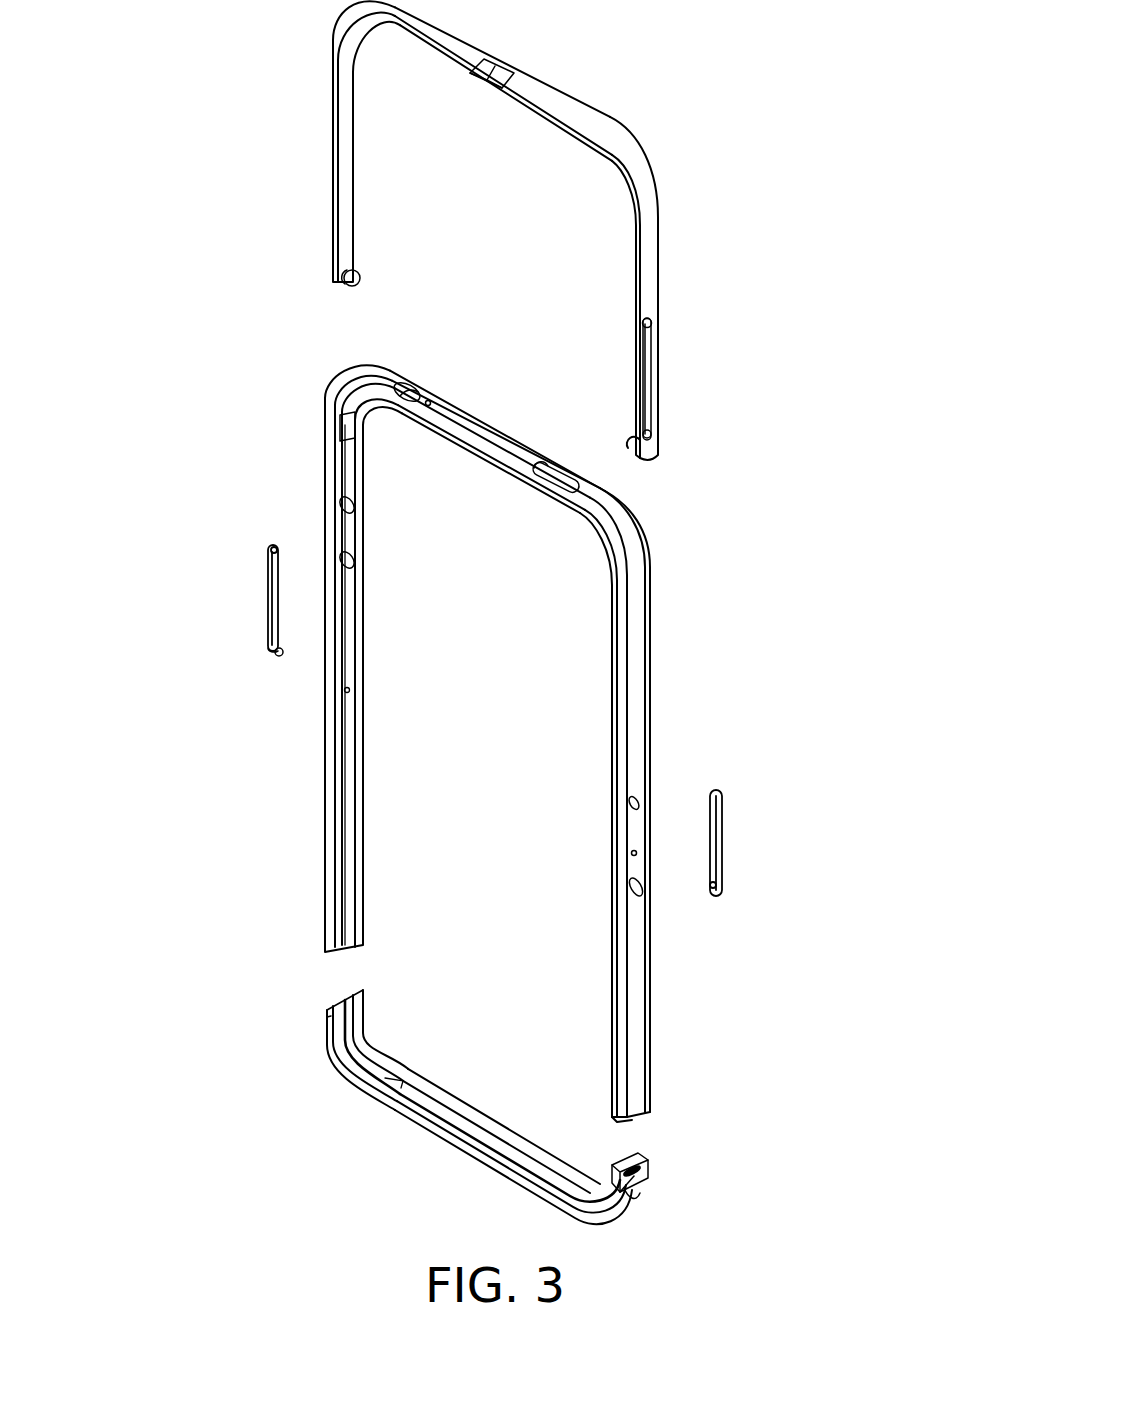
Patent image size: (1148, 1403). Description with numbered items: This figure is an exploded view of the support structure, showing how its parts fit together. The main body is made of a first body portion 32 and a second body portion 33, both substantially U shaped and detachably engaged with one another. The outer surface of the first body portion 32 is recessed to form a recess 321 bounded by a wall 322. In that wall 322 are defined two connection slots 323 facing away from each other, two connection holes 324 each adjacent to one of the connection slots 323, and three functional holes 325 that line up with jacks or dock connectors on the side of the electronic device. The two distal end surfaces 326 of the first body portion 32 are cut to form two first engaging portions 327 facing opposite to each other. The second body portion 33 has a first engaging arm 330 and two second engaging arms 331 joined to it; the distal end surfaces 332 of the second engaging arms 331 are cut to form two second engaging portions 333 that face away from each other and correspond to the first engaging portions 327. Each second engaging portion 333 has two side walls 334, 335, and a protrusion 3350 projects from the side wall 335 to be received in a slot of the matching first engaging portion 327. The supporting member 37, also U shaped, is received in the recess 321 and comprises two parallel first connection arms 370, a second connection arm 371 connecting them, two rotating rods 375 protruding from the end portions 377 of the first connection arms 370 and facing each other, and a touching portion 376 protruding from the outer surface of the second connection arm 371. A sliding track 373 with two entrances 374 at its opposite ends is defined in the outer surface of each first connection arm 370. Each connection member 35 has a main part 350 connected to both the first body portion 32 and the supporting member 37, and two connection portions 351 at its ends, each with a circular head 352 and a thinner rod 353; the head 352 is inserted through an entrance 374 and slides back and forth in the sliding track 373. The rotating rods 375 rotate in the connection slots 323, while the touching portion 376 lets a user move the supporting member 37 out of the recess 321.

The supporting member 37 is at (657, 145).
The first connection arms 370 is at (652, 243).
The second connection arm 371 is at (565, 102).
The sliding track 373 is at (648, 371).
The entrances 374 is at (652, 322).
The rotating rods 375 is at (360, 277).
The touching portion 376 is at (508, 66).
The end portions 377 is at (345, 241).
The first body portion 32 is at (657, 527).
The recess 321 is at (636, 630).
The wall 322 is at (470, 425).
The connection slots 323 is at (638, 798).
The connection holes 324 is at (636, 858).
The functional holes 325 is at (340, 560).
The distal end surfaces 326 is at (645, 1117).
The first engaging portions 327 is at (345, 950).
The connection member 35 is at (210, 558).
The main part 350 is at (270, 606).
The connection portions 351 is at (166, 628).
The head 352 is at (280, 658).
The rod 353 is at (270, 648).
The second body portion 33 is at (212, 1038).
The first engaging arm 330 is at (400, 1105).
The second engaging arms 331 is at (345, 1043).
The second engaging portions 333 is at (758, 1150).
The distal end surfaces 332 is at (648, 1156).
The side wall 334 is at (648, 1174).
The side wall 335 is at (648, 1164).
The protrusion 3350 is at (632, 1188).